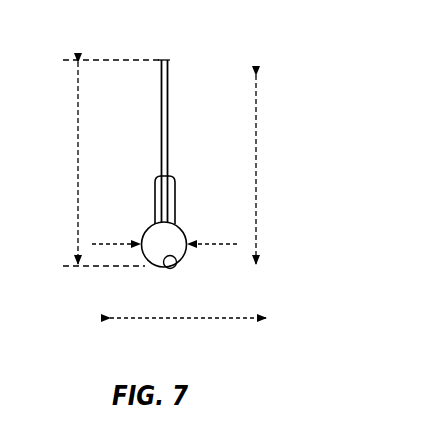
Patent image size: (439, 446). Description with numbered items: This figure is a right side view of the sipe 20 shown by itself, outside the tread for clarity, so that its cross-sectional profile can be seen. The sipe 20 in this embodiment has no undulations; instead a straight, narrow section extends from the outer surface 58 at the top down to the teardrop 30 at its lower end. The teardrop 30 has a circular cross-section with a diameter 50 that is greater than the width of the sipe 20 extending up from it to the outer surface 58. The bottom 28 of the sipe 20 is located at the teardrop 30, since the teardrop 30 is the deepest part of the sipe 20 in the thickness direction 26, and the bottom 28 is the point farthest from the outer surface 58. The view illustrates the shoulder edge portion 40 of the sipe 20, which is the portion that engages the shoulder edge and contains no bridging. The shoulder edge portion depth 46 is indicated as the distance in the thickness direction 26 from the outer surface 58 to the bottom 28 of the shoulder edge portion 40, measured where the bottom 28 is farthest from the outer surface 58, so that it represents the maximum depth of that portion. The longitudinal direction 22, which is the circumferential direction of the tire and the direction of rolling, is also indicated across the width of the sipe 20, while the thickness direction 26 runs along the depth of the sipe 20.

The sipe 20 is at (190, 40).
The longitudinal direction 22 is at (165, 320).
The thickness direction 26 is at (257, 150).
The bottom 28 is at (176, 263).
The teardrop 30 is at (157, 255).
The shoulder edge portion 40 is at (168, 122).
The shoulder edge portion depth 46 is at (77, 145).
The diameter 50 is at (208, 243).
The outer surface 58 is at (162, 59).